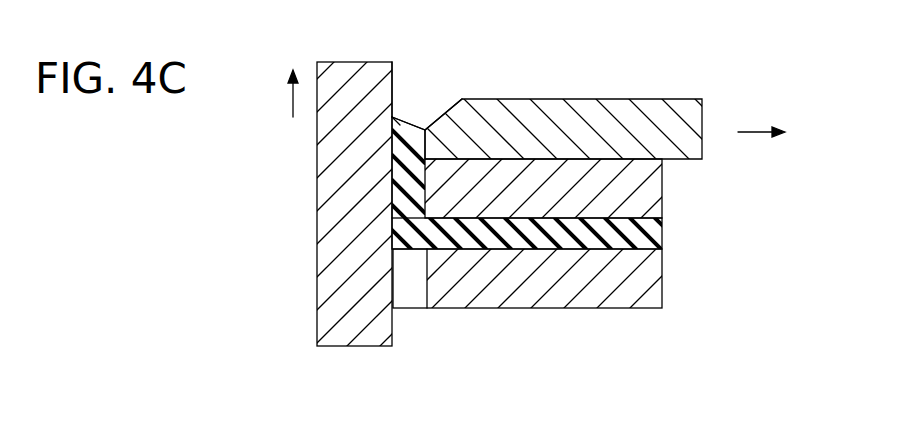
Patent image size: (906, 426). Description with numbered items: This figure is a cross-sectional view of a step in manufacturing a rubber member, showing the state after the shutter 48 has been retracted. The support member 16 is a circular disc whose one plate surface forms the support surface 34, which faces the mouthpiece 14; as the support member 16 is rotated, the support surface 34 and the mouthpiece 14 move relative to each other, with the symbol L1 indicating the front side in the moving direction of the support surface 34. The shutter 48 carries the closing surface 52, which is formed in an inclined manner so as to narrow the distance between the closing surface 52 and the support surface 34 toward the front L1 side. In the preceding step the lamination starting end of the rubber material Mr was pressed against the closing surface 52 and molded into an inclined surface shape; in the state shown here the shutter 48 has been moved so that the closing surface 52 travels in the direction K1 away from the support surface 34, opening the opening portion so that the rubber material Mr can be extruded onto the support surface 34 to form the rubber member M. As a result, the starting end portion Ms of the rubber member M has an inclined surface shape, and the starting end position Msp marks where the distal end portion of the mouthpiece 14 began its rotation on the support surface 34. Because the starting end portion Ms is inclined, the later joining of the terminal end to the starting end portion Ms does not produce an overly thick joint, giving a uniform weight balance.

The mouthpiece 14 is at (623, 297).
The support member 16 is at (330, 317).
The support surface 34 is at (392, 72).
The shutter 48 is at (653, 103).
The closing surface 52 is at (447, 146).
The rubber member M is at (405, 188).
The starting end portion Ms is at (402, 150).
The starting end position Msp is at (392, 117).
The rubber material Mr is at (658, 240).
The direction K1 is at (761, 119).
The front side in moving direction L1 is at (278, 93).